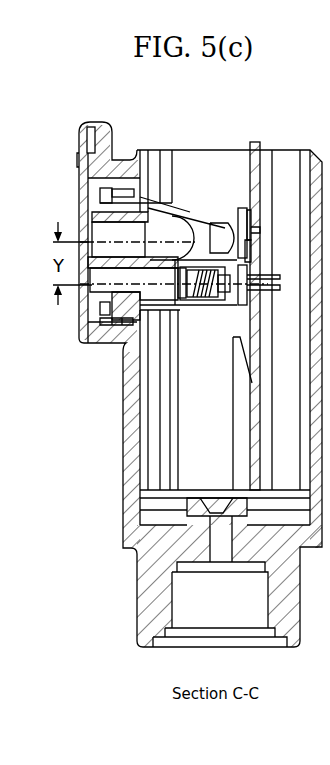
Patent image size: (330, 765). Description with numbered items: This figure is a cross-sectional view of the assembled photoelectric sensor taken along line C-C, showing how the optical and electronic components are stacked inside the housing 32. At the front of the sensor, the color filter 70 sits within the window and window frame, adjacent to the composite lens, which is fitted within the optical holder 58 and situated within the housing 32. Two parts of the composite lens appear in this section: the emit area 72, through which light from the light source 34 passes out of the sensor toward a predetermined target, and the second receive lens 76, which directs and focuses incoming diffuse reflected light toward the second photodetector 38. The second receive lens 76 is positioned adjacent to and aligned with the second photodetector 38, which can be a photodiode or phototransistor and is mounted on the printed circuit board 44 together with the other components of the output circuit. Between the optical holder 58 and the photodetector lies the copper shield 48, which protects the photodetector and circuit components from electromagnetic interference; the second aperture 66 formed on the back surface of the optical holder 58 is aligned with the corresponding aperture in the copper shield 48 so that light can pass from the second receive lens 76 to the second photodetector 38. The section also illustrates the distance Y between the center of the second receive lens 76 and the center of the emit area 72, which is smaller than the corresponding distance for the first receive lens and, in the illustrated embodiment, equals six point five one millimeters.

The housing 32 is at (123, 357).
The light source 34 is at (221, 303).
The second photodetector 38 is at (248, 246).
The printed circuit board 44 is at (254, 141).
The copper shield 48 is at (239, 210).
The optical holder 58 is at (96, 189).
The second aperture 66 is at (252, 224).
The color filter 70 is at (90, 214).
The emit area 72 is at (87, 292).
The second receive lens 76 is at (177, 213).